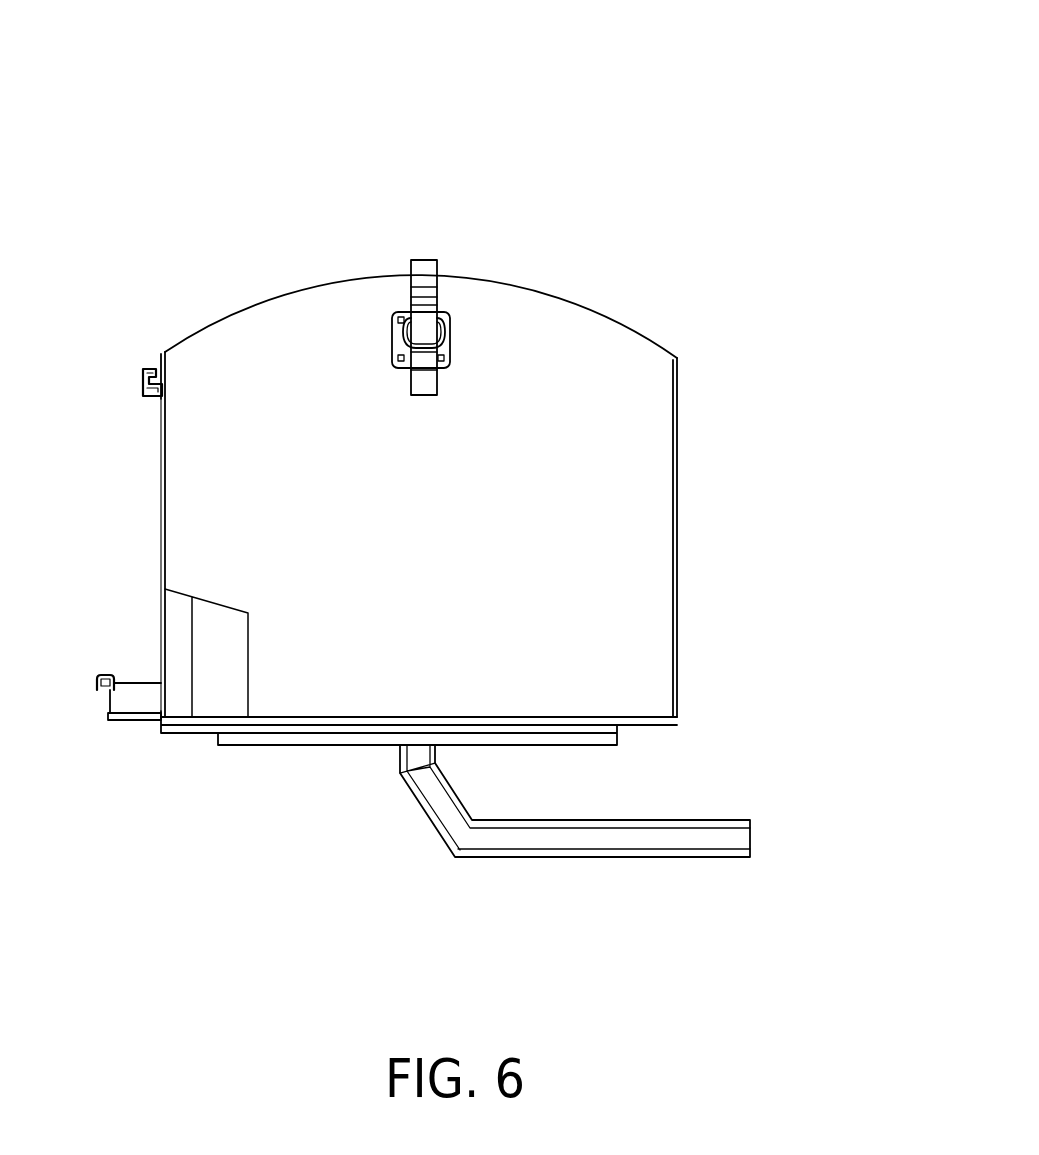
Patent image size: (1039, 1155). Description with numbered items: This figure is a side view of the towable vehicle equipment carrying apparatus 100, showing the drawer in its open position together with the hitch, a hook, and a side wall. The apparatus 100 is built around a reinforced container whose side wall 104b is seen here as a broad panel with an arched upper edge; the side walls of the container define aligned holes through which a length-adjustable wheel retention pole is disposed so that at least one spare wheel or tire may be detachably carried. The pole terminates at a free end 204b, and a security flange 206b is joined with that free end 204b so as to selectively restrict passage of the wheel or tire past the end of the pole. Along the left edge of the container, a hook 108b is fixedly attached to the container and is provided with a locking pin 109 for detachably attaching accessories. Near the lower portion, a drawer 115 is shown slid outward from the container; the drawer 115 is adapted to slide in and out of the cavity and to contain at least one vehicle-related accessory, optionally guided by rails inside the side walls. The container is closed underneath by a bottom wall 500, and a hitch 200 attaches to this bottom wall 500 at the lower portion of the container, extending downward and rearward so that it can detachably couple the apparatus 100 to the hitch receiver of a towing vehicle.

The towable vehicle equipment carrying apparatus 100 is at (152, 179).
The side wall 104b is at (620, 473).
The hook 108b is at (157, 398).
The locking pin 109 is at (155, 368).
The drawer 115 is at (108, 707).
The hitch 200 is at (610, 869).
The free end 204b is at (406, 318).
The security flange 206b is at (425, 278).
The bottom wall 500 is at (300, 734).